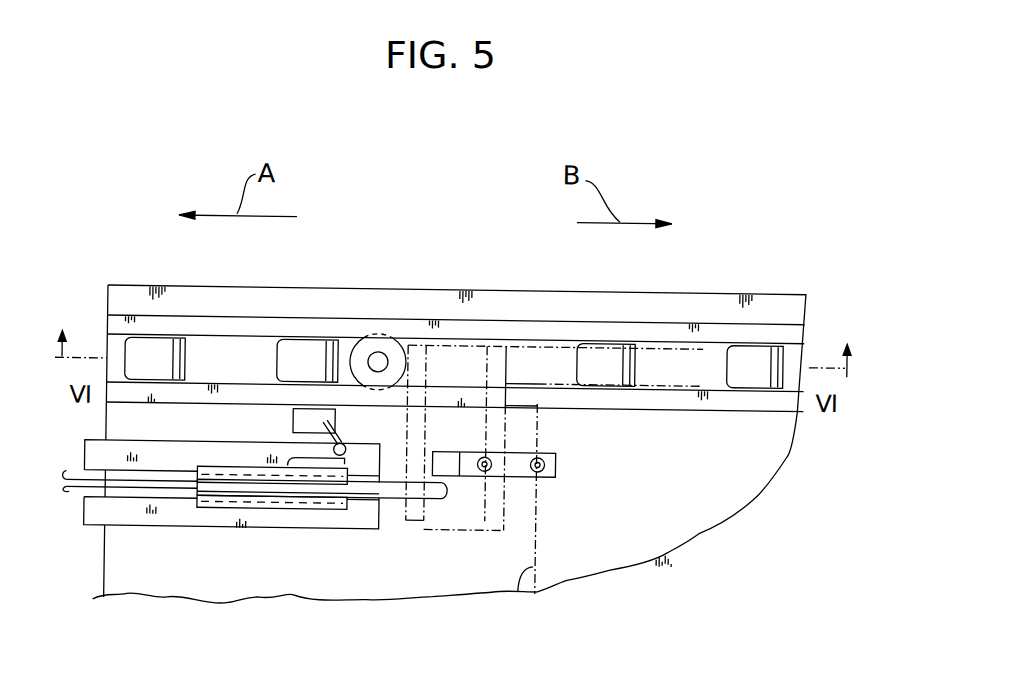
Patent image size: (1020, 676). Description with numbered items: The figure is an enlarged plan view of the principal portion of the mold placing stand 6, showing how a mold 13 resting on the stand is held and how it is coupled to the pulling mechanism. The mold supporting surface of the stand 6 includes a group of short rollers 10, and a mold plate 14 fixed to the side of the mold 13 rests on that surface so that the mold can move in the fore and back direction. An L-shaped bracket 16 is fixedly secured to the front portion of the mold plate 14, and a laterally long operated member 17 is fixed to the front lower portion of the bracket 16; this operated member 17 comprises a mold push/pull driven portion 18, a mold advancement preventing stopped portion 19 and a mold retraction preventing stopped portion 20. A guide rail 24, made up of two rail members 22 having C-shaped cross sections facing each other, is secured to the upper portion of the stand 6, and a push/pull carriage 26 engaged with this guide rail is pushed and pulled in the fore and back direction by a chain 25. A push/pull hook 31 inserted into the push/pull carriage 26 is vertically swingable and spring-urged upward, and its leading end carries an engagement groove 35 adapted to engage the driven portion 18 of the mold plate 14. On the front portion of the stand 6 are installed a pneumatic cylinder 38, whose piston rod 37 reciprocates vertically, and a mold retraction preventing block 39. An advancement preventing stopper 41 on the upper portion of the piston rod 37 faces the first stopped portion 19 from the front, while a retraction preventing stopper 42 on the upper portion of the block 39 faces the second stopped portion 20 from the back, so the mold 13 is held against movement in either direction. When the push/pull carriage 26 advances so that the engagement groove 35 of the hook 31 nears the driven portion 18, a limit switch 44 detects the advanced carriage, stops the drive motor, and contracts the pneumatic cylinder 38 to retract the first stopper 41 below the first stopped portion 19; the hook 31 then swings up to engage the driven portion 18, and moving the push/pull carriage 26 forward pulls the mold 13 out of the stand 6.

The mold placing stand 6 is at (500, 282).
The short rollers 10 is at (191, 356).
The mold 13 is at (537, 588).
The mold plate 14 is at (528, 338).
The L-shaped bracket 16 is at (459, 540).
The operated member 17 is at (416, 525).
The mold push/pull driven portion 18 is at (436, 494).
The mold advancement preventing stopped portion 19 is at (401, 322).
The mold retraction preventing stopped portion 20 is at (431, 458).
The rail members 22 is at (159, 461).
The guide rail 24 is at (231, 519).
The chain 25 is at (77, 491).
The push/pull carriage 26 is at (266, 508).
The push/pull hook 31 is at (296, 496).
The engagement groove 35 is at (398, 484).
The piston rod 37 is at (376, 293).
The pneumatic cylinder 38 is at (350, 336).
The mold retraction preventing block 39 is at (560, 456).
The advancement preventing stopper 41 is at (406, 346).
The retraction preventing stopper 42 is at (454, 462).
The limit switch 44 is at (295, 418).